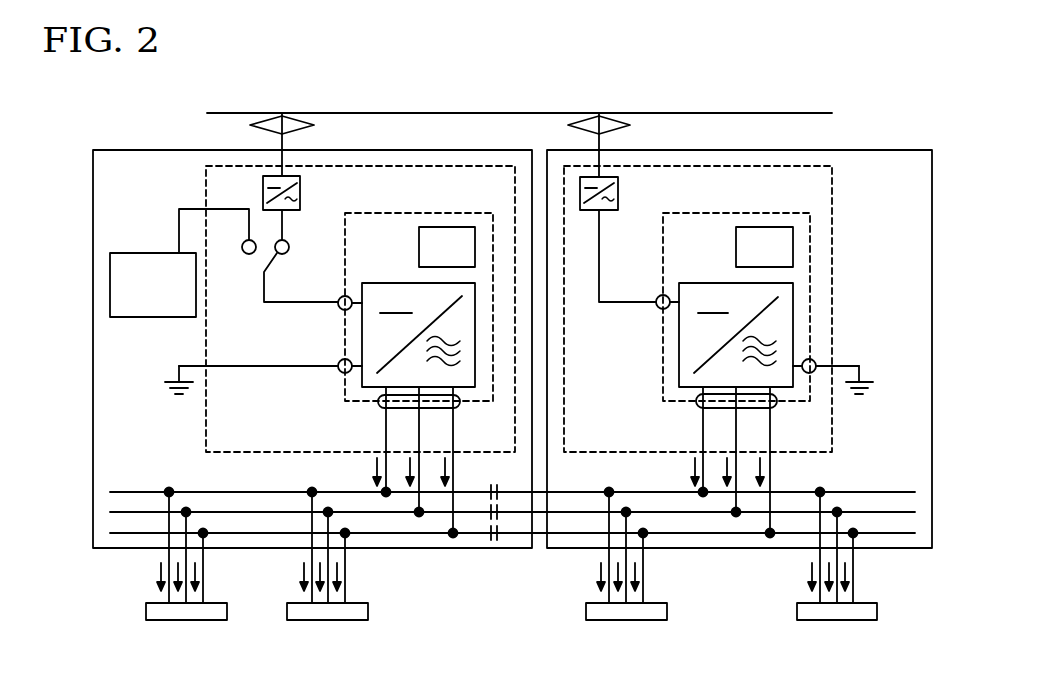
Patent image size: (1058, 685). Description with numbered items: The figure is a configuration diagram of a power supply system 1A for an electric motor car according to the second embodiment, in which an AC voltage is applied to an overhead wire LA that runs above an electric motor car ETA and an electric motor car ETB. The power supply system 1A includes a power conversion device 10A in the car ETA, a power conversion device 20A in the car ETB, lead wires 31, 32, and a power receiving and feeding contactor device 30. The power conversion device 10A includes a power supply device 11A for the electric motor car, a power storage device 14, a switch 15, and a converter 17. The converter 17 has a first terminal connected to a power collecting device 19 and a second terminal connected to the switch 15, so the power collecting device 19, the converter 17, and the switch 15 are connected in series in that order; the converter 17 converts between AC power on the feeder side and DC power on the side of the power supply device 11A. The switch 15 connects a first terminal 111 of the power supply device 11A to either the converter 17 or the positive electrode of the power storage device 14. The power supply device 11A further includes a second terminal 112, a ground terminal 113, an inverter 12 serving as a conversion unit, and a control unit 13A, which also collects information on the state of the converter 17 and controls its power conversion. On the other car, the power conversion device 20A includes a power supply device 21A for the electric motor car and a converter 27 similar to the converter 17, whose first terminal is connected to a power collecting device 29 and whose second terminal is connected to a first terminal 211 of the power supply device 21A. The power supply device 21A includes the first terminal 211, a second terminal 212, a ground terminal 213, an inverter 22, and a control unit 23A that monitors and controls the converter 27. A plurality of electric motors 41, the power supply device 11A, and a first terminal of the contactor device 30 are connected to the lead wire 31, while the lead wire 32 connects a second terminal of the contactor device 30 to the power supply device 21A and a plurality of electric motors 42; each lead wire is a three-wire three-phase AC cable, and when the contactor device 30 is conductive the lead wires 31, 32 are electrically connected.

The power supply system for the electric motor car 1A is at (962, 86).
The overhead wire LA is at (768, 113).
The electric motor car ETA is at (125, 150).
The electric motor car ETB is at (897, 150).
The power conversion device 10A is at (206, 180).
The power conversion device 20A is at (832, 182).
The power supply device for the electric motor car 11A is at (400, 213).
The power supply device for the electric motor car 21A is at (718, 213).
The power collecting device 19 is at (300, 120).
The power collecting device 29 is at (618, 120).
The converter 17 is at (300, 193).
The converter 27 is at (618, 193).
The power storage device 14 is at (127, 253).
The switch 15 is at (264, 250).
The inverter 12 is at (378, 283).
The inverter 22 is at (695, 283).
The control unit 13A is at (448, 227).
The control unit 23A is at (764, 227).
The first terminal 111 is at (338, 305).
The ground terminal 113 is at (338, 368).
The second terminal 112 is at (378, 402).
The first terminal 211 is at (656, 305).
The ground terminal 213 is at (816, 362).
The second terminal 212 is at (696, 402).
The lead wire 31 is at (186, 475).
The lead wire 32 is at (847, 475).
The power receiving and feeding contactor device 30 is at (488, 542).
The electric motors 41 is at (214, 603).
The electric motors 42 is at (655, 603).